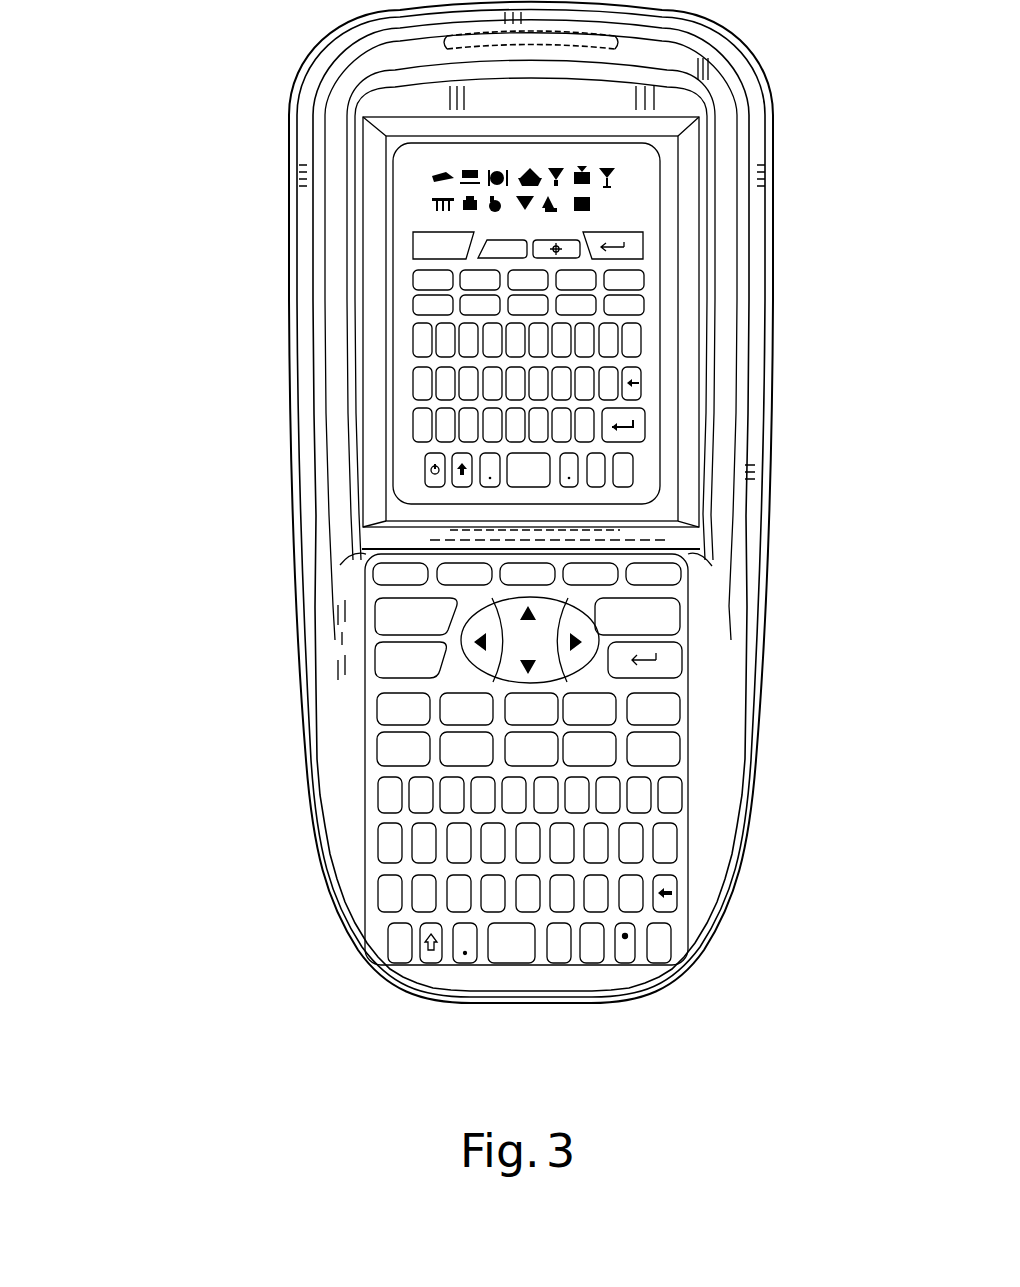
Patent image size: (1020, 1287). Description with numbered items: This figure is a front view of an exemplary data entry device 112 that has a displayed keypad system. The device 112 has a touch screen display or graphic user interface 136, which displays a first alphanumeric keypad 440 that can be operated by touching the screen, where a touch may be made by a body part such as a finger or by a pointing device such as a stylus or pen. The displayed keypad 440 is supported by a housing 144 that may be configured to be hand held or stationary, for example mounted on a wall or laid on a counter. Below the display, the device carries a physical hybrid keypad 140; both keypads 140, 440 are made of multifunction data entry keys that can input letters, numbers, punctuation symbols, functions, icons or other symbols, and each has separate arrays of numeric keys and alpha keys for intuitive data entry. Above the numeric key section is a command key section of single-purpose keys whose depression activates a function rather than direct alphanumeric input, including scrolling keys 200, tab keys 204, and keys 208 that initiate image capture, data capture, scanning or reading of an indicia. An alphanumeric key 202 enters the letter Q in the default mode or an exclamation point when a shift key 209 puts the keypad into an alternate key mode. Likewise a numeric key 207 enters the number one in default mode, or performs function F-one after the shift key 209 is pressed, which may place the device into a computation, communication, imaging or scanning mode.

The data entry device 112 is at (211, 222).
The first alphanumeric keypad 440 is at (408, 178).
The housing 144 is at (325, 484).
The touch screen display 136 is at (670, 510).
The keypad 140 is at (373, 557).
The scrolling keys 200 is at (380, 587).
The scan keys 208 is at (380, 610).
The tab keys 204 is at (380, 658).
The numeric input key 207 is at (380, 700).
The alphanumeric input key 202 is at (380, 783).
The shift key 209 is at (425, 955).